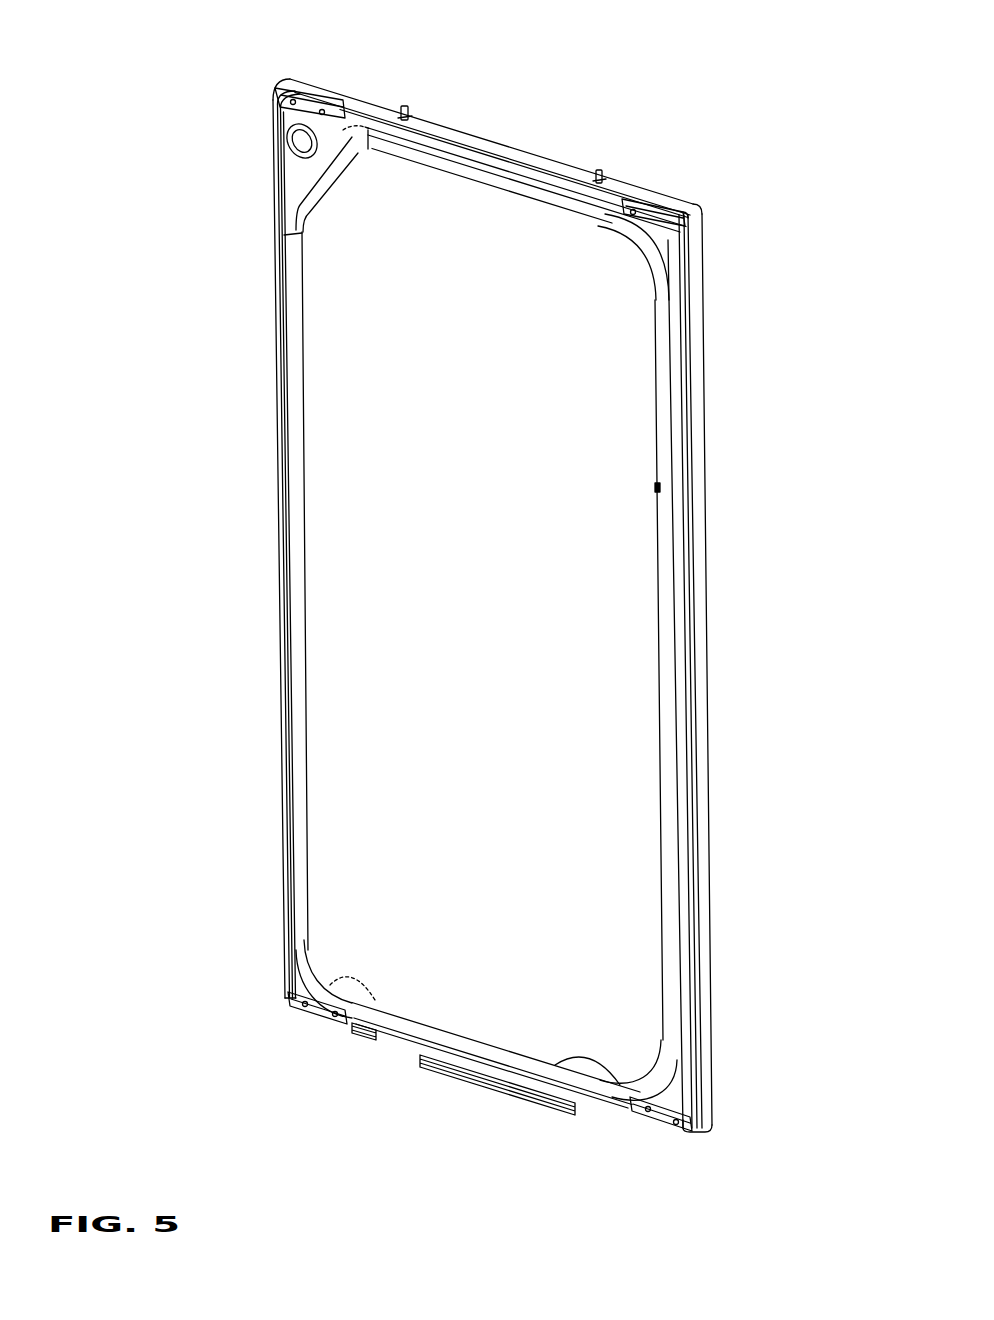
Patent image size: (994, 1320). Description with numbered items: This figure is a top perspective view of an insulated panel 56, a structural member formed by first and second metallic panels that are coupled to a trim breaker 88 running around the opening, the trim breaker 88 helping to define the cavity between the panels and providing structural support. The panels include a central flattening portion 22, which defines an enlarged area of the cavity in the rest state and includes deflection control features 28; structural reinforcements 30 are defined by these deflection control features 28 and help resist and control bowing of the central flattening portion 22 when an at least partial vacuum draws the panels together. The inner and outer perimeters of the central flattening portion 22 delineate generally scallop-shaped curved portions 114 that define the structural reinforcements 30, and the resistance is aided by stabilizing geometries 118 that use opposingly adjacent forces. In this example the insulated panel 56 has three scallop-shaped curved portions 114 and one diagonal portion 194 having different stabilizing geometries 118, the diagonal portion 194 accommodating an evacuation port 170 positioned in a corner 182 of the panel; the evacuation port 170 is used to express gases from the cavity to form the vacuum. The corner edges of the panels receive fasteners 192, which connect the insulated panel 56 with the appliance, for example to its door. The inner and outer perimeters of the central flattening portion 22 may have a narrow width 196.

The central flattening portion 22 is at (457, 523).
The deflection control features 28 is at (305, 945).
The structural reinforcements 30 is at (670, 212).
The insulated panel 56 is at (692, 127).
The trim breaker 88 is at (523, 160).
The curved portion 114 is at (603, 252).
The stabilizing geometries 118 is at (317, 188).
The evacuation port 170 is at (283, 132).
The corner 182 is at (332, 144).
The fasteners 192 is at (307, 106).
The diagonal portion 194 is at (321, 226).
The narrow width 196 is at (662, 486).